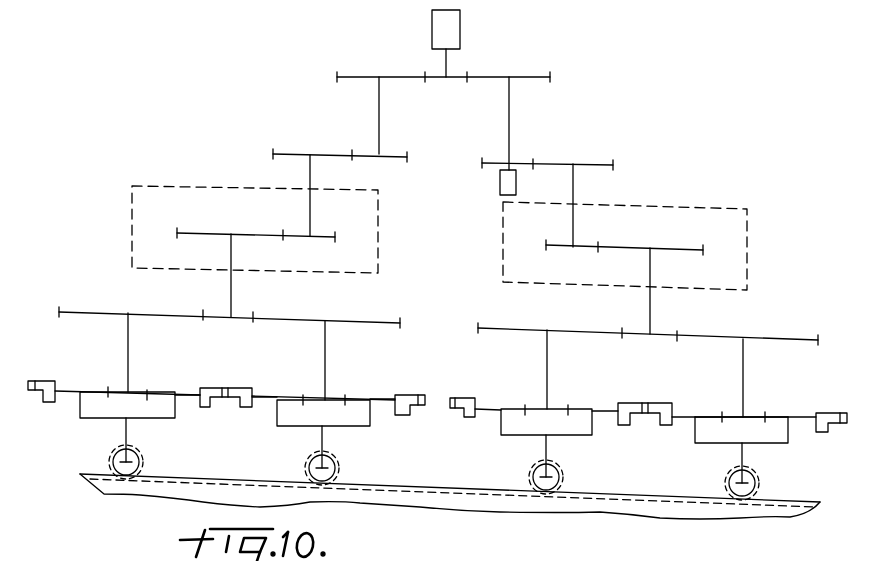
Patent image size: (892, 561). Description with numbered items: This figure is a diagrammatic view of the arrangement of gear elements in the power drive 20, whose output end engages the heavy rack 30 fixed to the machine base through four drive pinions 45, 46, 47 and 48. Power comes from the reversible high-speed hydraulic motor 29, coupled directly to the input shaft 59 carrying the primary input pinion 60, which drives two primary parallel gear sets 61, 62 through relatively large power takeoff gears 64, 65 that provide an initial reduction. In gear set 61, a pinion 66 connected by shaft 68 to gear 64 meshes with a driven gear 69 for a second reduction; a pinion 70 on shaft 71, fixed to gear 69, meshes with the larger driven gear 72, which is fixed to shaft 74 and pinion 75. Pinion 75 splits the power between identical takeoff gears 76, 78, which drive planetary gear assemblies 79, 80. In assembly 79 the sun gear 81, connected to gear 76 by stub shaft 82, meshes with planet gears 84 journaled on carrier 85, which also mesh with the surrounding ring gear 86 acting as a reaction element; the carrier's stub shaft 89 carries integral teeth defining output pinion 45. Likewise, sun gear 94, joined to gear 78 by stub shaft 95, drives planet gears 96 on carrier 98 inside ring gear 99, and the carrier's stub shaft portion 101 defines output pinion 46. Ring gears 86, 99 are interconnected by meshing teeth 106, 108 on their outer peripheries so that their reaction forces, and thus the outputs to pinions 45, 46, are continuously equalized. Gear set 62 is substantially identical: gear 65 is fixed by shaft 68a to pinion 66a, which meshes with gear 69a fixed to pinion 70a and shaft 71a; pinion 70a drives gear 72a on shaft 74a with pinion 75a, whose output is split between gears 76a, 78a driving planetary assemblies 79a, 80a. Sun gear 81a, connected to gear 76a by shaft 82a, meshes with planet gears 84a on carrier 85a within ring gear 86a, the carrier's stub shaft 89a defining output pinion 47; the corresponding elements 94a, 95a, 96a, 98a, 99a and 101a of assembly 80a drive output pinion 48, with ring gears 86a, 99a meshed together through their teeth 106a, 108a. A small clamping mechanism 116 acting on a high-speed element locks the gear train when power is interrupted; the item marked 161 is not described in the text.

The power drive 20 is at (407, 56).
The reversible high-speed hydraulic motor 29 is at (460, 30).
The rack 30 is at (403, 504).
The drive pinion 45 is at (140, 462).
The drive pinion 46 is at (336, 468).
The drive pinion 47 is at (560, 477).
The drive pinion 48 is at (756, 484).
The input shaft 59 is at (447, 62).
The primary input pinion 60 is at (452, 80).
The primary parallel gear set 61 is at (262, 150).
The primary parallel gear set 62 is at (647, 158).
The power takeoff gear 64 is at (353, 74).
The power takeoff gear 65 is at (530, 78).
The pinion 66 is at (400, 160).
The pinion 66a is at (498, 140).
The shaft 68 is at (377, 118).
The shaft 68a is at (511, 128).
The driven gear 69 is at (288, 153).
The gear 69a is at (588, 162).
The pinion 70 is at (323, 242).
The pinion 70a is at (566, 248).
The shaft 71 is at (311, 182).
The shaft 71a is at (575, 197).
The driven gear 72 is at (213, 212).
The gear 72a is at (668, 247).
The shaft 74 is at (232, 265).
The shaft 74a is at (649, 268).
The pinion 75 is at (239, 318).
The pinion 75a is at (633, 330).
The takeoff gear 76 is at (105, 312).
The gear 76a is at (528, 328).
The takeoff gear 78 is at (362, 322).
The gear 78a is at (752, 339).
The planetary gear assembly 79 is at (142, 382).
The planetary gear assembly 79a is at (544, 378).
The planetary gear assembly 80 is at (331, 390).
The planetary gear assembly 80a is at (750, 408).
The sun gear 81 is at (117, 390).
The sun gear 81a is at (548, 410).
The stub shaft 82 is at (130, 340).
The shaft 82a is at (549, 352).
The planet gears 84 is at (79, 394).
The planet gears 84a is at (606, 408).
The carrier 85 is at (115, 420).
The carrier 85a is at (564, 437).
The ring gear 86 is at (52, 383).
The ring gear 86a is at (470, 398).
The stub shaft 89 is at (130, 440).
The stub shaft 89a is at (537, 468).
The sun gear 94 is at (318, 398).
The sun gear 94a is at (733, 416).
The stub shaft 95 is at (324, 340).
The stub shaft 95a is at (742, 360).
The planet gears 96 is at (266, 400).
The planet gears 96a is at (673, 416).
The carrier 98 is at (306, 427).
The carrier 98a is at (720, 444).
The ring gear 99 is at (416, 380).
The ring gear 99a is at (660, 414).
The stub shaft portion 101 is at (326, 448).
The stub shaft portion 101a is at (754, 455).
The meshing teeth 106 is at (31, 382).
The meshing teeth 106a is at (458, 416).
The meshing teeth 108 is at (452, 397).
The meshing teeth 108a is at (846, 412).
The clamping mechanism 116 is at (500, 192).
The rail section 161 is at (430, 548).